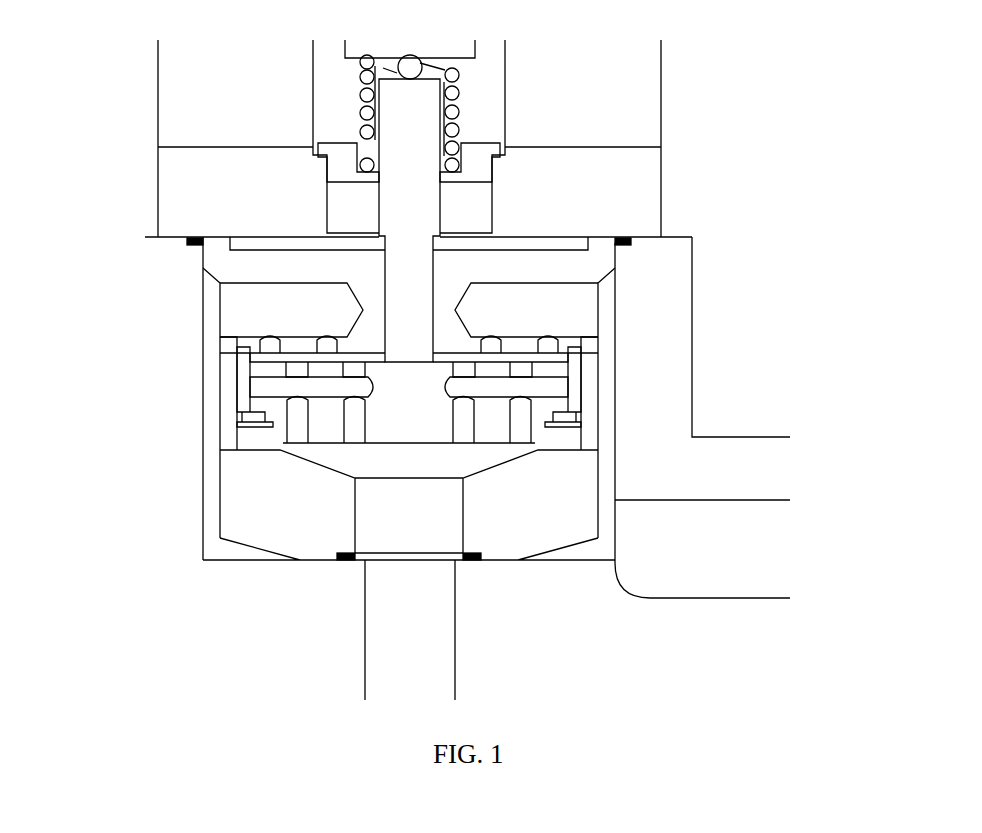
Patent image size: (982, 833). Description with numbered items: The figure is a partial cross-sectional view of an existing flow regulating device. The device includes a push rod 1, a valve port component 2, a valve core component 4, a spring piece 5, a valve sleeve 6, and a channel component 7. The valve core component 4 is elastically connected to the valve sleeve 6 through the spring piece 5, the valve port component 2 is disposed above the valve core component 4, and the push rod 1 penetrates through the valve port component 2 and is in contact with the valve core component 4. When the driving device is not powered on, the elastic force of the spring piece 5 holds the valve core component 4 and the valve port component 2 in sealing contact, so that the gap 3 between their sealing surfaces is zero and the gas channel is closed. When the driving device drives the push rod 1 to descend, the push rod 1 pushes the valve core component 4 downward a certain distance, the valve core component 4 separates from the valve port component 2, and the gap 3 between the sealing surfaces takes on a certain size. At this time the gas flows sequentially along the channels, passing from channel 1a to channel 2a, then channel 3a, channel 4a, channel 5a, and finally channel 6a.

The push rod 1 is at (413, 147).
The channel 1a is at (385, 617).
The valve port component 2 is at (460, 307).
The channel 2a is at (300, 413).
The gap 3 is at (537, 362).
The channel 3a is at (267, 348).
The valve core component 4 is at (542, 405).
The channel 4a is at (255, 305).
The spring piece 5 is at (580, 422).
The channel 5a is at (607, 528).
The valve sleeve 6 is at (575, 485).
The channel 6a is at (700, 582).
The channel component 7 is at (677, 488).